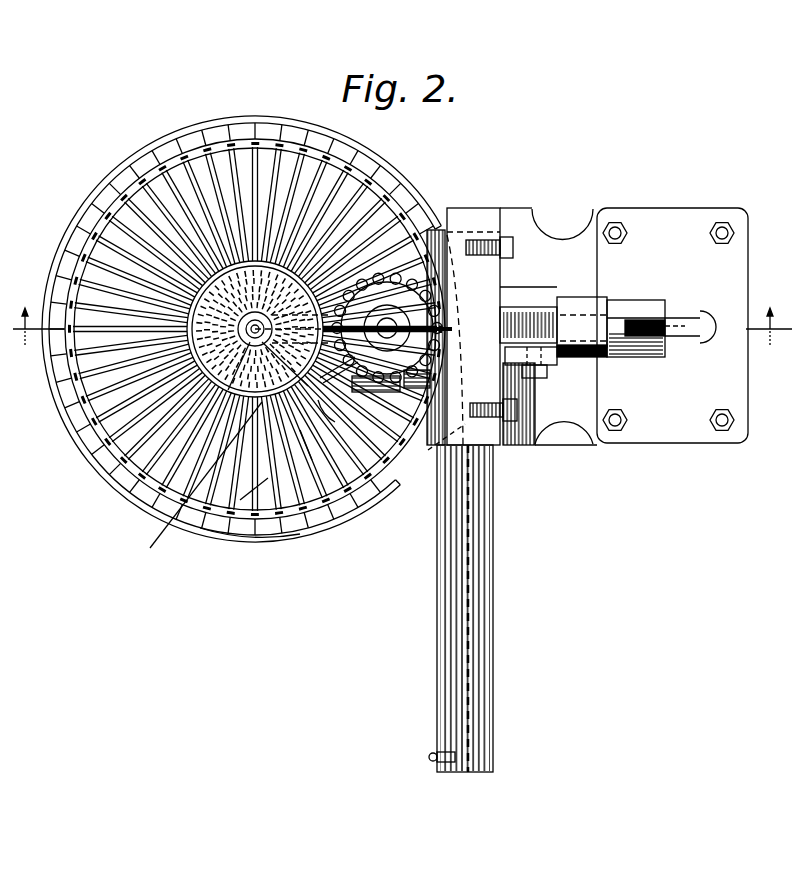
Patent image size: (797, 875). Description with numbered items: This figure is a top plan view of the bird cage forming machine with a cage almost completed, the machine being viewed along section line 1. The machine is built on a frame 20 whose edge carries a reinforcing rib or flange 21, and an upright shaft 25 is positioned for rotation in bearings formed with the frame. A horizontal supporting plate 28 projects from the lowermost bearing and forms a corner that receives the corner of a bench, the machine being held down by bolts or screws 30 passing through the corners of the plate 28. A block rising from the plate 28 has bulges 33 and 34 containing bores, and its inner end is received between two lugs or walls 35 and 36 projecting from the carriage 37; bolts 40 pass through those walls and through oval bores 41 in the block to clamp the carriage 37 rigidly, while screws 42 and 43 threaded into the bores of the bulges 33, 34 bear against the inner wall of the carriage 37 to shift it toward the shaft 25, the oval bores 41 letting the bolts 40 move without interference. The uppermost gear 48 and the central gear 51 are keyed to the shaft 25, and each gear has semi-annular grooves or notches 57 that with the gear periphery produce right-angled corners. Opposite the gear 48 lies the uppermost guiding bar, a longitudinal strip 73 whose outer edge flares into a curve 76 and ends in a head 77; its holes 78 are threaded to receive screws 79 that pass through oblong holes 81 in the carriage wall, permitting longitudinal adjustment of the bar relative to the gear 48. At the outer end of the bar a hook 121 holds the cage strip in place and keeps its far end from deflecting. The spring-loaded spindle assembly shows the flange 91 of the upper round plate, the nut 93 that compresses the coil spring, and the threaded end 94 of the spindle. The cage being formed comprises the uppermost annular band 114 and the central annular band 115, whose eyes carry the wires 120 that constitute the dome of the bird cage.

The section line 1- 1 is at (402, 316).
The frame 20 is at (66, 416).
The rib or flange 21 is at (100, 357).
The upright shaft 25 is at (388, 336).
The horizontal supporting plate 28 is at (528, 447).
The bolts or screws 30 is at (716, 228).
The bulge 33 is at (583, 301).
The bulge 34 is at (643, 358).
The lug or wall 35 is at (512, 298).
The lug or wall 36 is at (555, 363).
The carriage 37 is at (472, 272).
The bolts 40 is at (533, 378).
The oval bores 41 is at (545, 298).
The screw 42 is at (623, 317).
The screw 43 is at (688, 334).
The uppermost gear 48 is at (352, 365).
The central gear 51 is at (362, 375).
The semi-annular grooves or notches 57 is at (372, 400).
The longitudinal strip 73 is at (473, 604).
The curve 76 is at (445, 229).
The head 77 is at (437, 240).
The holes 78 is at (436, 447).
The screws 79 is at (515, 244).
The oblong holes 81 is at (500, 448).
The flange 91 is at (312, 462).
The nut 93 is at (160, 505).
The threaded upper end of spindle 94 is at (318, 400).
The uppermost annular band 114 is at (132, 491).
The central annular band 115 is at (222, 542).
The wires 120 is at (266, 480).
The hook 121 is at (430, 754).